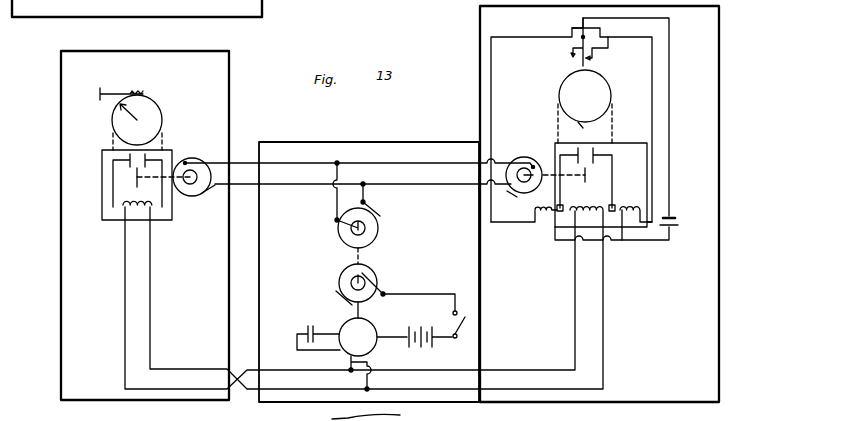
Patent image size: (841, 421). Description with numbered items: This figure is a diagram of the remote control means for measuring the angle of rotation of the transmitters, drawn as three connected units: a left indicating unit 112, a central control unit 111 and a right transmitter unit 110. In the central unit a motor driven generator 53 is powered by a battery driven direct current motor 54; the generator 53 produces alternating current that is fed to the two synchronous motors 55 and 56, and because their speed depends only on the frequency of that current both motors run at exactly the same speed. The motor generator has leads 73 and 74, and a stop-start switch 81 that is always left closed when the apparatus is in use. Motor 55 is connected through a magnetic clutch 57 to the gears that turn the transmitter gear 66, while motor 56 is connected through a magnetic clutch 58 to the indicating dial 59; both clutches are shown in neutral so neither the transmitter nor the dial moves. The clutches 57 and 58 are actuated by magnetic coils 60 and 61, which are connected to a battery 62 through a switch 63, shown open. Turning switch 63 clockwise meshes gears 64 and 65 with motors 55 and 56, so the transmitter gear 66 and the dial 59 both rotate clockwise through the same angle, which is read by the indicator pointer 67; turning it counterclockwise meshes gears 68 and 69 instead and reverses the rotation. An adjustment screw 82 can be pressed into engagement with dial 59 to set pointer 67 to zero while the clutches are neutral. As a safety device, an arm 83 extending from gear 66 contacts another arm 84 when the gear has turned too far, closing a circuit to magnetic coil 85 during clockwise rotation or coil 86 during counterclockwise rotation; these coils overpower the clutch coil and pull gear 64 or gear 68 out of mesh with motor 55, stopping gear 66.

The left station unit 112 is at (61, 234).
The magnetic clutch 58 is at (102, 173).
The gear 65 is at (128, 157).
The gear 69 is at (150, 158).
The indicating dial 59 is at (152, 103).
The indicator pointer 67 is at (123, 115).
The adjustment screw 82 is at (114, 93).
The magnetic coil 61 is at (137, 212).
The synchronous motor 56 is at (197, 160).
The central control unit 111 is at (380, 142).
The generator 53 is at (378, 231).
The direct current motor 54 is at (341, 277).
The lead 74 is at (350, 306).
The stop-start switch 81 is at (465, 317).
The switch 63 is at (358, 354).
The battery 62 is at (306, 326).
The lead 73 is at (395, 340).
The right station unit 110 is at (720, 245).
The arm 84 is at (583, 67).
The transmitter gear 66 is at (574, 83).
The arm 83 is at (576, 126).
The magnetic clutch 57 is at (650, 143).
The gear 64 is at (579, 152).
The gear 68 is at (596, 152).
The magnetic coil 60 is at (594, 204).
The synchronous motor 55 is at (520, 158).
The magnetic coil 85 is at (544, 214).
The magnetic coil 86 is at (634, 214).